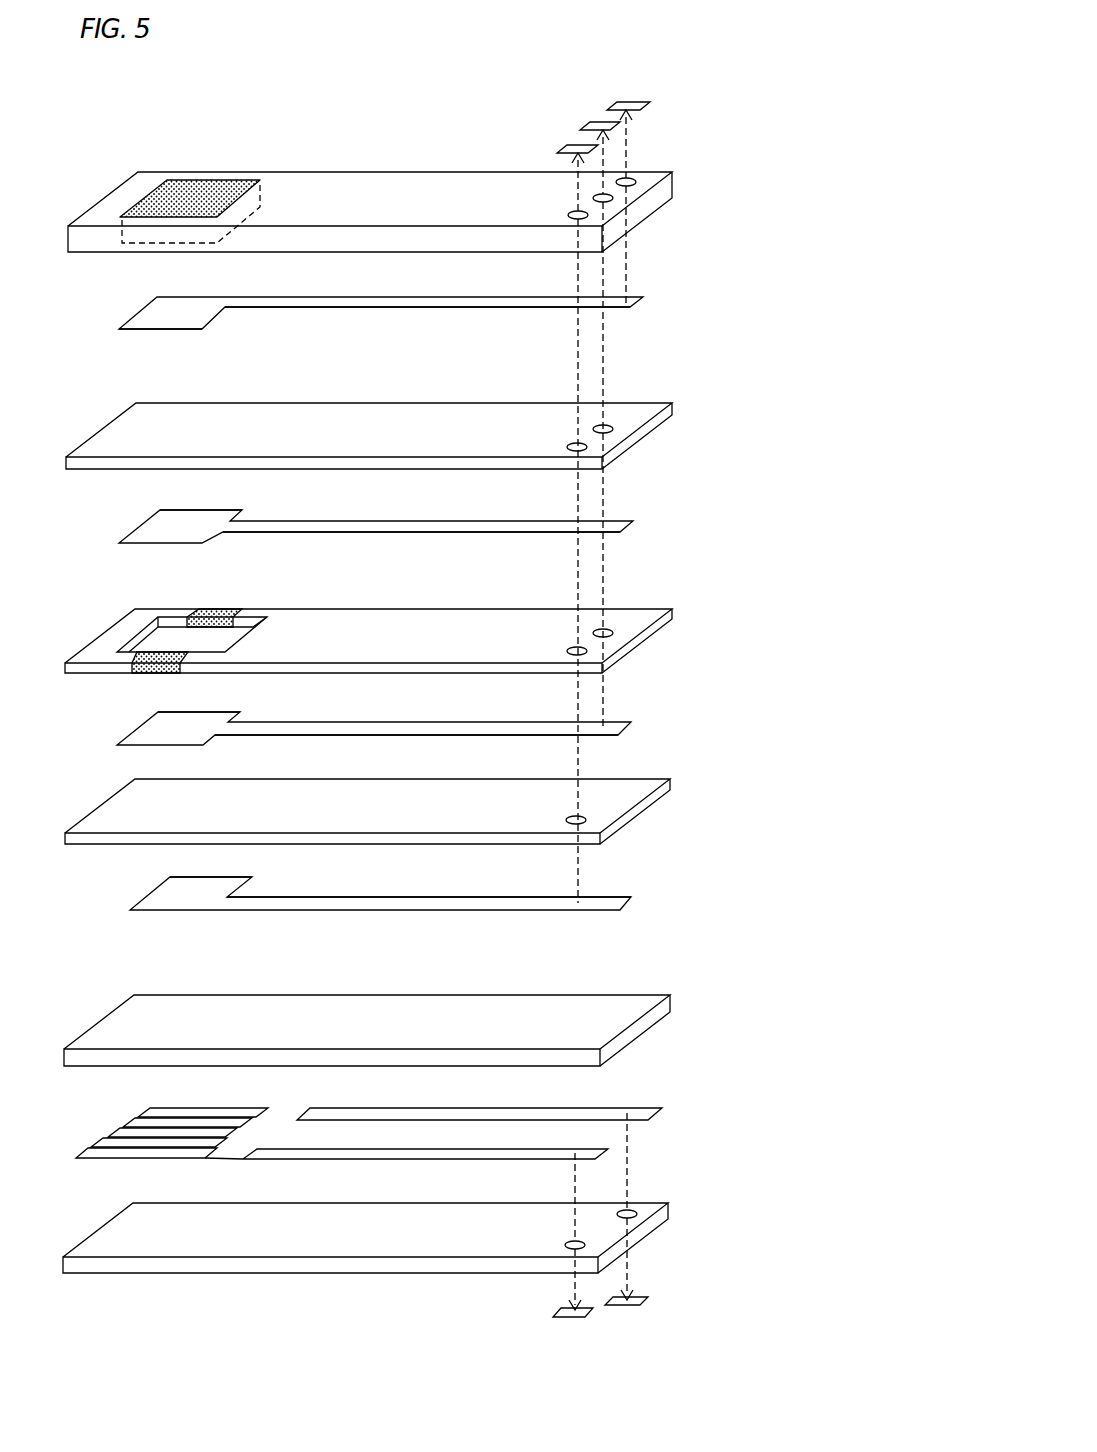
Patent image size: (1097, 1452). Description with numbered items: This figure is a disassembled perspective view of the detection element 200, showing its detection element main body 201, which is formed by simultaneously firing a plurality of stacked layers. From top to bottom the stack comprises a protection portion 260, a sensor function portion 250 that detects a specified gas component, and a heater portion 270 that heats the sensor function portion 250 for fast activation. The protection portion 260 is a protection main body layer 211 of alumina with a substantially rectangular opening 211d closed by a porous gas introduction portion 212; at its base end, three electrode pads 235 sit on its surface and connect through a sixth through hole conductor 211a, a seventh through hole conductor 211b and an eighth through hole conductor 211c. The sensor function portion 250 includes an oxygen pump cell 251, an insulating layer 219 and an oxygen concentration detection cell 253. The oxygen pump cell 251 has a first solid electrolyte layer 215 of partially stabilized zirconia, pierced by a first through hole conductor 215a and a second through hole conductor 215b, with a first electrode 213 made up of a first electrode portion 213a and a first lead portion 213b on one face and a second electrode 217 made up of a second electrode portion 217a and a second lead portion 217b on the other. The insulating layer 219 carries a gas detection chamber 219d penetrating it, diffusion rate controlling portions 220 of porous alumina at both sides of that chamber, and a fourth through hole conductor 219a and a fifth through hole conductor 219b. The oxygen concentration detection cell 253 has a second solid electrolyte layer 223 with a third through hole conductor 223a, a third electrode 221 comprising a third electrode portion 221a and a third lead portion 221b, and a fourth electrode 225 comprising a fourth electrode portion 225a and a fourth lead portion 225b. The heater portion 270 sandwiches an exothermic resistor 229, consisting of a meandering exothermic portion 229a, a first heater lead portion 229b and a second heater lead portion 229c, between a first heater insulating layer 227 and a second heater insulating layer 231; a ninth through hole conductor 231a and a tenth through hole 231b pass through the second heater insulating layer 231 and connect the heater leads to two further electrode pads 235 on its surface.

The gas sensor element 200 is at (682, 90).
The detection element main body 201 is at (823, 42).
The protection main body layer 211 is at (645, 233).
The sixth through hole conductor 211a is at (572, 214).
The seventh through hole conductor 211b is at (598, 200).
The eighth through hole conductor 211c is at (634, 181).
The opening 211d is at (238, 206).
The porous gas introduction portion 212 is at (200, 186).
The first electrode 213 is at (648, 307).
The first electrode portion 213a is at (168, 318).
The first lead portion 213b is at (404, 312).
The first solid electrolyte layer 215 is at (648, 447).
The first through hole conductor 215a is at (575, 450).
The second through hole conductor 215b is at (607, 428).
The second electrode 217 is at (640, 534).
The second electrode portion 217a is at (158, 531).
The second lead portion 217b is at (384, 532).
The insulating layer 219 is at (648, 657).
The fourth through hole conductor 219a is at (573, 651).
The fifth through hole conductor 219b is at (607, 632).
The gas detection chamber 219d is at (216, 630).
The diffusion rate controlling portions 220 is at (205, 612).
The third electrode 221 is at (634, 736).
The third electrode portion 221a is at (143, 741).
The third lead portion 221b is at (393, 729).
The second solid electrolyte layer 223 is at (644, 832).
The third through hole conductor 223a is at (572, 822).
The fourth electrode 225 is at (634, 910).
The fourth electrode portion 225a is at (160, 895).
The fourth lead portion 225b is at (376, 906).
The first heater insulating layer 227 is at (658, 1050).
The exothermic resistor 229 is at (392, 1137).
The exothermic portion 229a is at (105, 1143).
The first heater lead portion 229b is at (451, 1153).
The second heater lead portion 229c is at (462, 1114).
The second heater insulating layer 231 is at (645, 1258).
The ninth through hole conductor 231a is at (566, 1249).
The tenth through hole 231b is at (634, 1212).
The electrode pads 235 is at (608, 106).
The sensor function portion 250 is at (815, 286).
The oxygen pump cell 251 is at (747, 556).
The oxygen concentration detection cell 253 is at (747, 719).
The protection portion 260 is at (745, 100).
The heater portion 270 is at (769, 990).